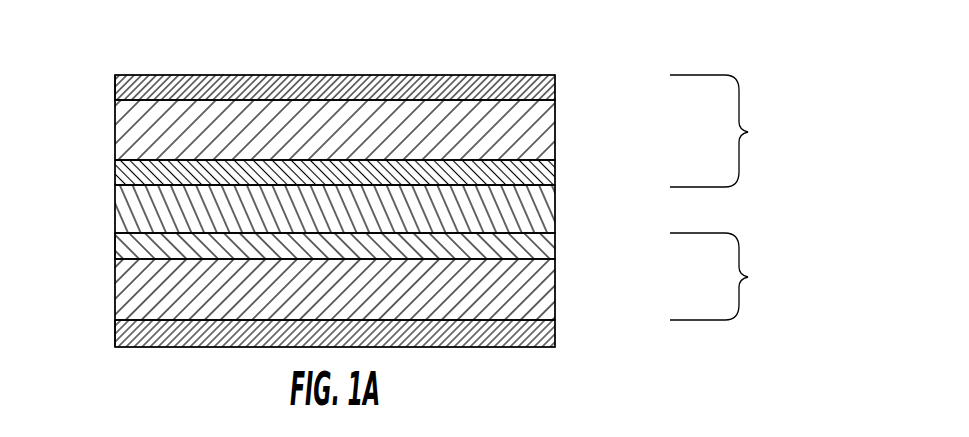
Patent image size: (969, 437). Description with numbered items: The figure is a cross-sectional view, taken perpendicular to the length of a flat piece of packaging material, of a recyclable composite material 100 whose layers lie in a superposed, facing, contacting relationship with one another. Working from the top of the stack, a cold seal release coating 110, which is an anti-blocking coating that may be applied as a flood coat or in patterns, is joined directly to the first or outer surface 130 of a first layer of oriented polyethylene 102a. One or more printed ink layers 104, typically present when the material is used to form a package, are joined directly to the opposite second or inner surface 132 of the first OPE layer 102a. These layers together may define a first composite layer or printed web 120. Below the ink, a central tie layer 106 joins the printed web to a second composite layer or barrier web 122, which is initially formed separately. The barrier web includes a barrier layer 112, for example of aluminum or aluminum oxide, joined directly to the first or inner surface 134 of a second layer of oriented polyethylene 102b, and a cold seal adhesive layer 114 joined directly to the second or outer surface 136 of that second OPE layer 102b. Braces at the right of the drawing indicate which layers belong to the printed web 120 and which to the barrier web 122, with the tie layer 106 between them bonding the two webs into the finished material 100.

The composite material 100 is at (647, 36).
The cold seal release coating 110 is at (115, 92).
The barrier layer 112 is at (115, 248).
The cold seal adhesive layer 114 is at (115, 332).
The first composite layer 120 is at (728, 131).
The second composite layer 122 is at (728, 276).
The first surface of first OPE layer 130 is at (538, 96).
The first layer of oriented polyethylene 102a is at (555, 140).
The printed ink layer 104 is at (555, 178).
The tie layer 106 is at (555, 222).
The second surface of first OPE layer 132 is at (131, 160).
The first surface of second OPE layer 134 is at (538, 260).
The second layer of oriented polyethylene 102b is at (555, 302).
The second surface of second OPE layer 136 is at (535, 323).